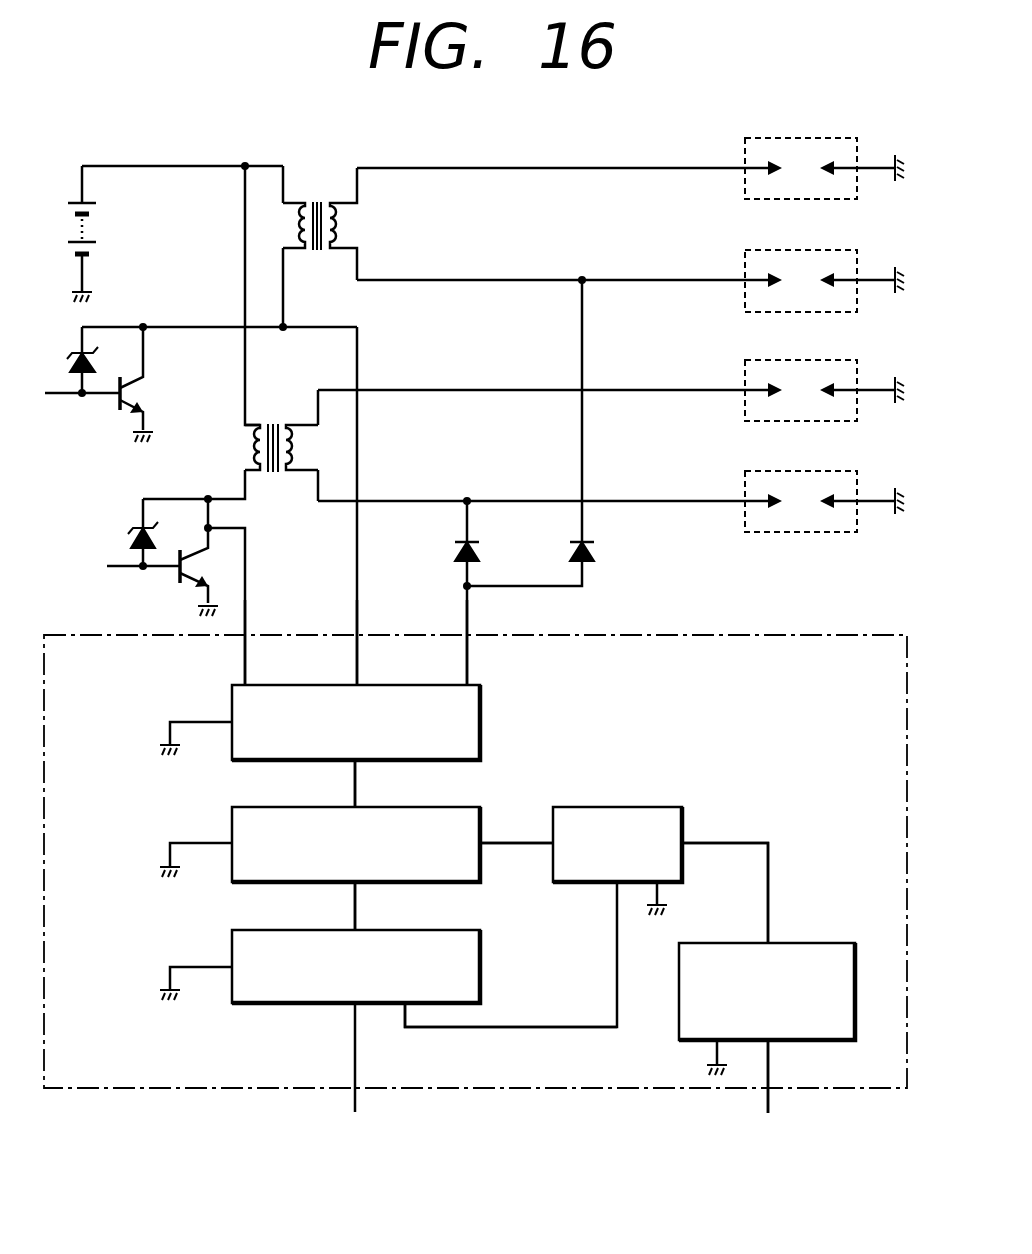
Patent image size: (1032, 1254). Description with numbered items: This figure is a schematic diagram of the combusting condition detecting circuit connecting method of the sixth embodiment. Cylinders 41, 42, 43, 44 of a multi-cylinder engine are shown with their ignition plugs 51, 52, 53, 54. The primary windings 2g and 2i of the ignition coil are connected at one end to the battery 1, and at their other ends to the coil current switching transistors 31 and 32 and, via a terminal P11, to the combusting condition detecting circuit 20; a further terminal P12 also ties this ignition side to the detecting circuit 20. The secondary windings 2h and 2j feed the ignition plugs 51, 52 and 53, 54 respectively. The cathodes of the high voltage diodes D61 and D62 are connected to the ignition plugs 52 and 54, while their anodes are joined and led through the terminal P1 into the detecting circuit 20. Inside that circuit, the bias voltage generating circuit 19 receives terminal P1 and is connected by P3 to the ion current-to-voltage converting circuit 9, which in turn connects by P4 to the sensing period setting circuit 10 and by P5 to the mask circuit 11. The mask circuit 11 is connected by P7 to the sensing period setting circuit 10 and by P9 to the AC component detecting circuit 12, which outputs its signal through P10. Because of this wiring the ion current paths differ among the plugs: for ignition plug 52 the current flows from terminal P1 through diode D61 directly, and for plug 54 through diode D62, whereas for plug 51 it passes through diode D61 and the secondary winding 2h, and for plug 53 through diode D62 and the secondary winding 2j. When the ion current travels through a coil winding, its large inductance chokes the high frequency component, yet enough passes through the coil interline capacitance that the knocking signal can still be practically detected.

The battery 1 is at (99, 232).
The primary winding 2g is at (295, 216).
The secondary winding 2h is at (348, 230).
The primary winding 2i is at (250, 452).
The secondary winding 2j is at (302, 452).
The coil current switching transistor 31 is at (114, 412).
The coil current switching transistor 32 is at (174, 585).
The cylinder 41 is at (838, 130).
The cylinder 42 is at (838, 242).
The cylinder 43 is at (838, 352).
The cylinder 44 is at (838, 463).
The ignition plug 51 is at (757, 152).
The ignition plug 52 is at (757, 264).
The ignition plug 53 is at (757, 374).
The ignition plug 54 is at (757, 485).
The high voltage diode D61 is at (596, 548).
The high voltage diode D62 is at (482, 548).
The terminal P1 is at (471, 614).
The terminal P3 is at (359, 784).
The terminal P4 is at (359, 905).
The terminal P5 is at (520, 841).
The terminal P7 is at (520, 1025).
The terminal P9 is at (771, 870).
The terminal P10 is at (771, 1066).
The terminal P11 is at (249, 614).
The terminal P12 is at (361, 614).
The bias voltage generating circuit 19 is at (484, 722).
The ion current-to-voltage converting circuit 9 is at (449, 805).
The sensing period setting circuit 10 is at (447, 927).
The mask circuit 11 is at (648, 805).
The AC component detecting circuit 12 is at (810, 940).
The combusting condition detecting circuit 20 is at (848, 634).